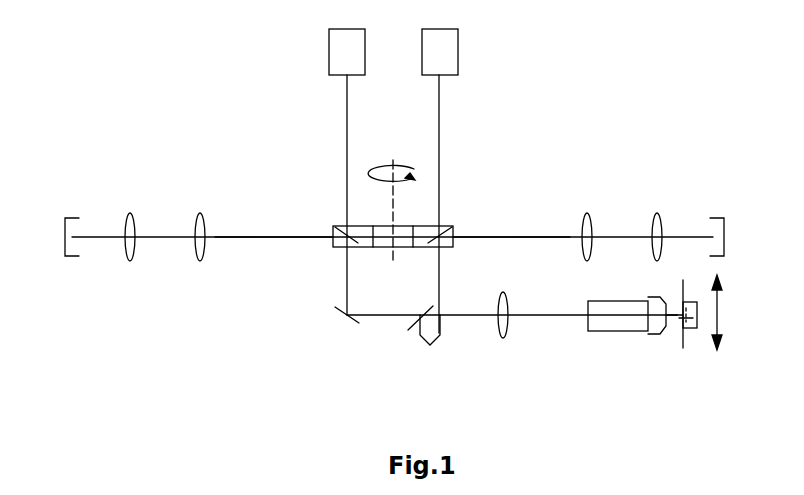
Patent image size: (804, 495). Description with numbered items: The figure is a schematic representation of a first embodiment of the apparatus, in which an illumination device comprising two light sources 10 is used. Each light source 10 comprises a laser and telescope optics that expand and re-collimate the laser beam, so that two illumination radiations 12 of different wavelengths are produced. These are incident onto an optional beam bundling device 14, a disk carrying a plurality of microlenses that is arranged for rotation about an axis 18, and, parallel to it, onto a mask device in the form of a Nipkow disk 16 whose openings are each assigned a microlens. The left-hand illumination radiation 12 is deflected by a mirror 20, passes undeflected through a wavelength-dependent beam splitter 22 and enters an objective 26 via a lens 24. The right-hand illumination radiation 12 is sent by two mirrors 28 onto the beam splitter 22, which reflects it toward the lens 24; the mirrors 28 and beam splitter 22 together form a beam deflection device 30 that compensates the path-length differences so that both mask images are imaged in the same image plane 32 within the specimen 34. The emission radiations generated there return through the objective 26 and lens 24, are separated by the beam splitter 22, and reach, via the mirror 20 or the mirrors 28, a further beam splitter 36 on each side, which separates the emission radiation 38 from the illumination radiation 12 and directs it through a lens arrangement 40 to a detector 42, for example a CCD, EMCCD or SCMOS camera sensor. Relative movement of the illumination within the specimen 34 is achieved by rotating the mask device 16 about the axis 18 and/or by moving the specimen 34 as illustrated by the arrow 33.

The light source 10 is at (337, 57).
The illumination radiation 12 is at (347, 121).
The beam bundling device 14 is at (427, 227).
The Nipkow disk 16 is at (365, 250).
The axis 18 is at (405, 163).
The mirror 20 is at (340, 310).
The beam splitter 22 is at (428, 308).
The lens 24 is at (503, 292).
The objective 26 is at (605, 320).
The mirror 28 is at (415, 324).
The beam deflection device 30 is at (453, 332).
The image plane 32 is at (688, 287).
The arrow 33 is at (720, 313).
The specimen 34 is at (692, 329).
The beam splitter 36 is at (348, 231).
The emission radiation 38 is at (258, 236).
The lens arrangement 40 is at (200, 213).
The detector 42 is at (62, 226).